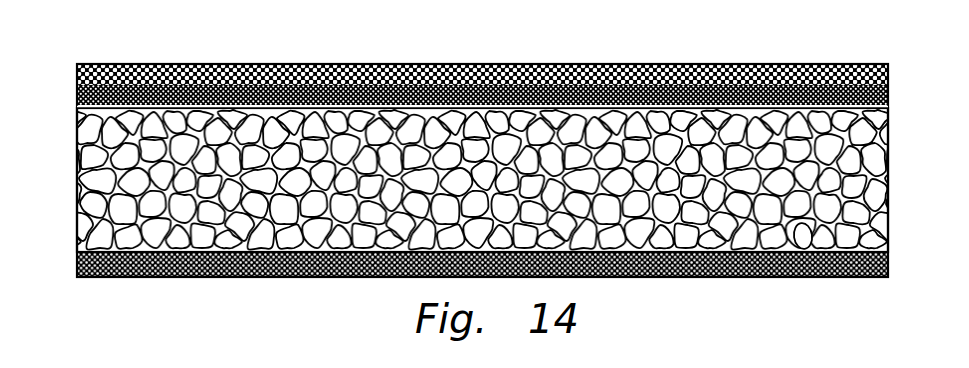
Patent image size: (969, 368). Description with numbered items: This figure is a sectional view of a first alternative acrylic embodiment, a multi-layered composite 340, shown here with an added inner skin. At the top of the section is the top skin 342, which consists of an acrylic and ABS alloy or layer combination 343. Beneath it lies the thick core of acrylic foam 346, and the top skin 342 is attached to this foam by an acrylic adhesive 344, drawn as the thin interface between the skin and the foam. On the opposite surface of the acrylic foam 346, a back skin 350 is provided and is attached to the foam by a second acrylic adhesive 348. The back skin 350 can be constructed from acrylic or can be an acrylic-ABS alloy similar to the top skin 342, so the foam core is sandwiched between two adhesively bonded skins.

The multi-layered composite 340 is at (122, 49).
The top skin 342 is at (259, 64).
The acrylic and ABS alloy or layer combination 343 is at (889, 100).
The acrylic adhesive 344 is at (78, 108).
The acrylic foam 346 is at (803, 248).
The acrylic adhesive 348 is at (77, 253).
The back skin 350 is at (257, 278).